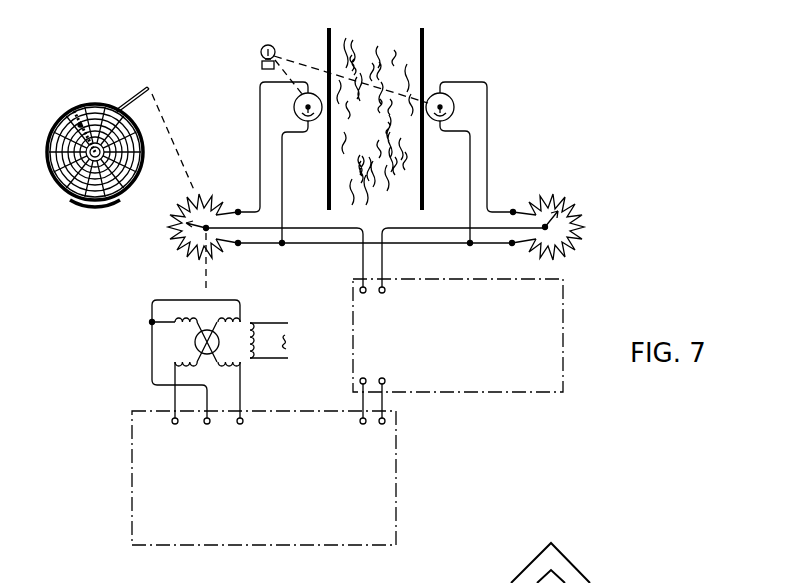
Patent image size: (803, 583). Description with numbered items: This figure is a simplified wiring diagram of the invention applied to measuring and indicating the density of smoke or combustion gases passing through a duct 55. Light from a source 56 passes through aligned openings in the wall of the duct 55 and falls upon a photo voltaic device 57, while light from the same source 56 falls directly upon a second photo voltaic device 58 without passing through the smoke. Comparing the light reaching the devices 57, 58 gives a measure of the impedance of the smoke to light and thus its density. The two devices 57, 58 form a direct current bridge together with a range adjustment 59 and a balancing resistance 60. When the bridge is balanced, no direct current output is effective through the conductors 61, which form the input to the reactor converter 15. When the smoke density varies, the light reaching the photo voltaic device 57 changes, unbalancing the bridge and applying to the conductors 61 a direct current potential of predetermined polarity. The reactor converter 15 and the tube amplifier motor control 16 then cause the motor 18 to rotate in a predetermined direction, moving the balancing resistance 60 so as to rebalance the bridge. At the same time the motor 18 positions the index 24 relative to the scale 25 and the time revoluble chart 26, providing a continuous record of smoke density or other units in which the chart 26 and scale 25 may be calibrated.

The reactor converter 15 is at (500, 394).
The tube amplifier motor control 16 is at (397, 481).
The motor 18 is at (141, 352).
The index 24 is at (137, 90).
The scale 25 is at (78, 108).
The time revoluble chart 26 is at (114, 201).
The duct 55 is at (424, 56).
The light source 56 is at (262, 46).
The photo voltaic device 57 is at (469, 162).
The photo voltaic device 58 is at (280, 162).
The range adjustment 59 is at (616, 227).
The balancing resistance 60 is at (191, 243).
The conductors 61 is at (363, 266).